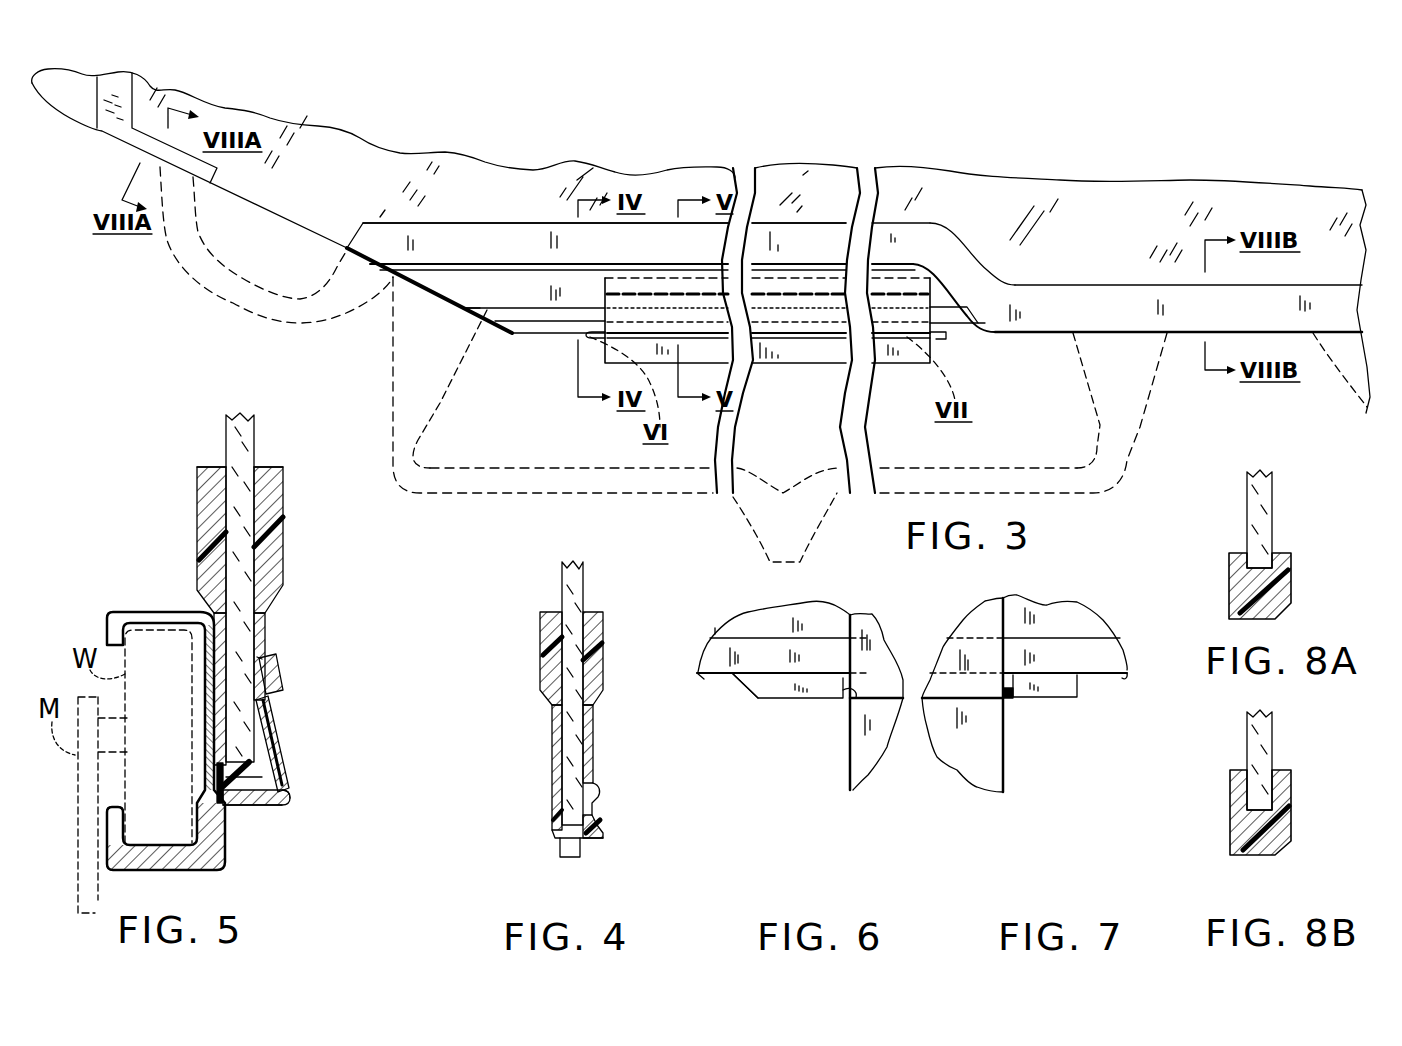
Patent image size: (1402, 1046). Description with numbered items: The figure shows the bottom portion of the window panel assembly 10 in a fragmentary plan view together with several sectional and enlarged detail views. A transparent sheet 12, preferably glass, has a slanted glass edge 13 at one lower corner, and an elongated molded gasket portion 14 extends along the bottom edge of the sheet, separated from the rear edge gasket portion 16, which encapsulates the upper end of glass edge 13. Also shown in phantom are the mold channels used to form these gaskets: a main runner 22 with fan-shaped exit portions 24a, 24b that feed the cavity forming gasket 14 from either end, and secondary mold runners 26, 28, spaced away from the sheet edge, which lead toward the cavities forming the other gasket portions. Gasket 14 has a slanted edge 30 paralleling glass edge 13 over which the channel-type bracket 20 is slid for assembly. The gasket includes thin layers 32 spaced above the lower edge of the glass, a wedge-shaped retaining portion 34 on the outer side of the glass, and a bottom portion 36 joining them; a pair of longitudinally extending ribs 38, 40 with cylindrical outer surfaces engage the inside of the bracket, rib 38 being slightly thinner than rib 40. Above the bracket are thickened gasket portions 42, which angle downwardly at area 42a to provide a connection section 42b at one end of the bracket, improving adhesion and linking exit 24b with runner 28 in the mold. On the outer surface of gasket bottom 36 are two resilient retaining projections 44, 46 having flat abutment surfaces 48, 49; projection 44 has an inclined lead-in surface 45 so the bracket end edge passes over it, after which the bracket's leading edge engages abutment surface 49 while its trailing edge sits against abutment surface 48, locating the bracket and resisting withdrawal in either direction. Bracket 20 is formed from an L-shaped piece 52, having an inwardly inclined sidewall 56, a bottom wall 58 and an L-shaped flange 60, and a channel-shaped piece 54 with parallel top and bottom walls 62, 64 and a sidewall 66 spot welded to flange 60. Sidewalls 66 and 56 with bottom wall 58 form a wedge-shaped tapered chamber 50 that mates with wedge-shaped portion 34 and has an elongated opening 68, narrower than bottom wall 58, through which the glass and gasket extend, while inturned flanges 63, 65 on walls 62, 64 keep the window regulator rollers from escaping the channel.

In FIG. 3, the window panel assembly 10 is at (1104, 146).
In FIG. 3, the transparent sheet 12 is at (367, 172).
In FIG. 5, the transparent sheet 12 is at (253, 450).
In FIG. 4, the transparent sheet 12 is at (579, 588).
In FIG. 8A, the transparent sheet 12 is at (1270, 502).
In FIG. 8B, the transparent sheet 12 is at (1272, 744).
In FIG. 3, the slanted glass edge 13 is at (283, 222).
In FIG. 3, the gasket portion 14 is at (442, 218).
In FIG. 5, the gasket portion 14 is at (285, 494).
In FIG. 3, the rear edge gasket portion 16 is at (112, 130).
In FIG. 8A, the rear edge gasket portion 16 is at (1292, 570).
In FIG. 3, the channel-type bracket 20 is at (803, 367).
In FIG. 5, the channel-type bracket 20 is at (140, 607).
In FIG. 6, the channel-type bracket 20 is at (851, 778).
In FIG. 7, the channel-type bracket 20 is at (983, 762).
In FIG. 3, the main runner 22 is at (600, 480).
In FIG. 3, the fan-shaped exit portion 24a is at (420, 397).
In FIG. 3, the fan-shaped exit portion 24b is at (1147, 377).
In FIG. 3, the secondary mold runner 26 is at (276, 254).
In FIG. 3, the secondary mold runner 28 is at (1347, 383).
In FIG. 3, the slanted edge 30 is at (407, 282).
In FIG. 3, the thin layers 32 is at (517, 302).
In FIG. 5, the thin layers 32 is at (220, 607).
In FIG. 4, the thin layers 32 is at (552, 745).
In FIG. 3, the wedge-shaped retaining portion 34 is at (503, 318).
In FIG. 5, the wedge-shaped retaining portion 34 is at (286, 735).
In FIG. 5, the bottom portion 36 is at (255, 785).
In FIG. 4, the bottom portion 36 is at (597, 846).
In FIG. 6, the bottom portion 36 is at (722, 676).
In FIG. 7, the bottom portion 36 is at (1105, 674).
In FIG. 3, the rib 38 is at (533, 310).
In FIG. 5, the rib 38 is at (289, 700).
In FIG. 4, the rib 38 is at (599, 795).
In FIG. 3, the rib 40 is at (573, 337).
In FIG. 5, the rib 40 is at (297, 777).
In FIG. 4, the rib 40 is at (601, 820).
In FIG. 6, the rib 40 is at (752, 652).
In FIG. 7, the rib 40 is at (1100, 648).
In FIG. 3, the thickened gasket portions 42 is at (534, 257).
In FIG. 5, the thickened gasket portions 42 is at (200, 507).
In FIG. 4, the thickened gasket portions 42 is at (540, 628).
In FIG. 3, the angled area 42a is at (957, 253).
In FIG. 3, the connection section 42b is at (1103, 319).
In FIG. 8B, the connection section 42b is at (1290, 808).
In FIG. 3, the retaining projection 44 is at (593, 335).
In FIG. 4, the retaining projection 44 is at (561, 852).
In FIG. 6, the retaining projection 44 is at (792, 688).
In FIG. 6, the inclined lead-in surface 45 is at (740, 683).
In FIG. 3, the retaining projection 46 is at (940, 340).
In FIG. 7, the retaining projection 46 is at (1063, 697).
In FIG. 6, the abutment surface 48 is at (852, 695).
In FIG. 7, the abutment surface 49 is at (1010, 705).
In FIG. 5, the tapered chamber 50 is at (295, 710).
In FIG. 5, the L-shaped piece 52 is at (295, 800).
In FIG. 5, the channel-shaped piece 54 is at (110, 612).
In FIG. 5, the inwardly inclined sidewall 56 is at (290, 750).
In FIG. 5, the bottom wall 58 is at (268, 808).
In FIG. 5, the L-shaped flange 60 is at (200, 870).
In FIG. 5, the top wall 62 is at (145, 610).
In FIG. 5, the inturned flange 63 is at (107, 637).
In FIG. 5, the bottom wall 64 is at (101, 865).
In FIG. 5, the inturned flange 65 is at (115, 820).
In FIG. 5, the sidewall 66 is at (208, 731).
In FIG. 5, the elongated opening 68 is at (268, 670).